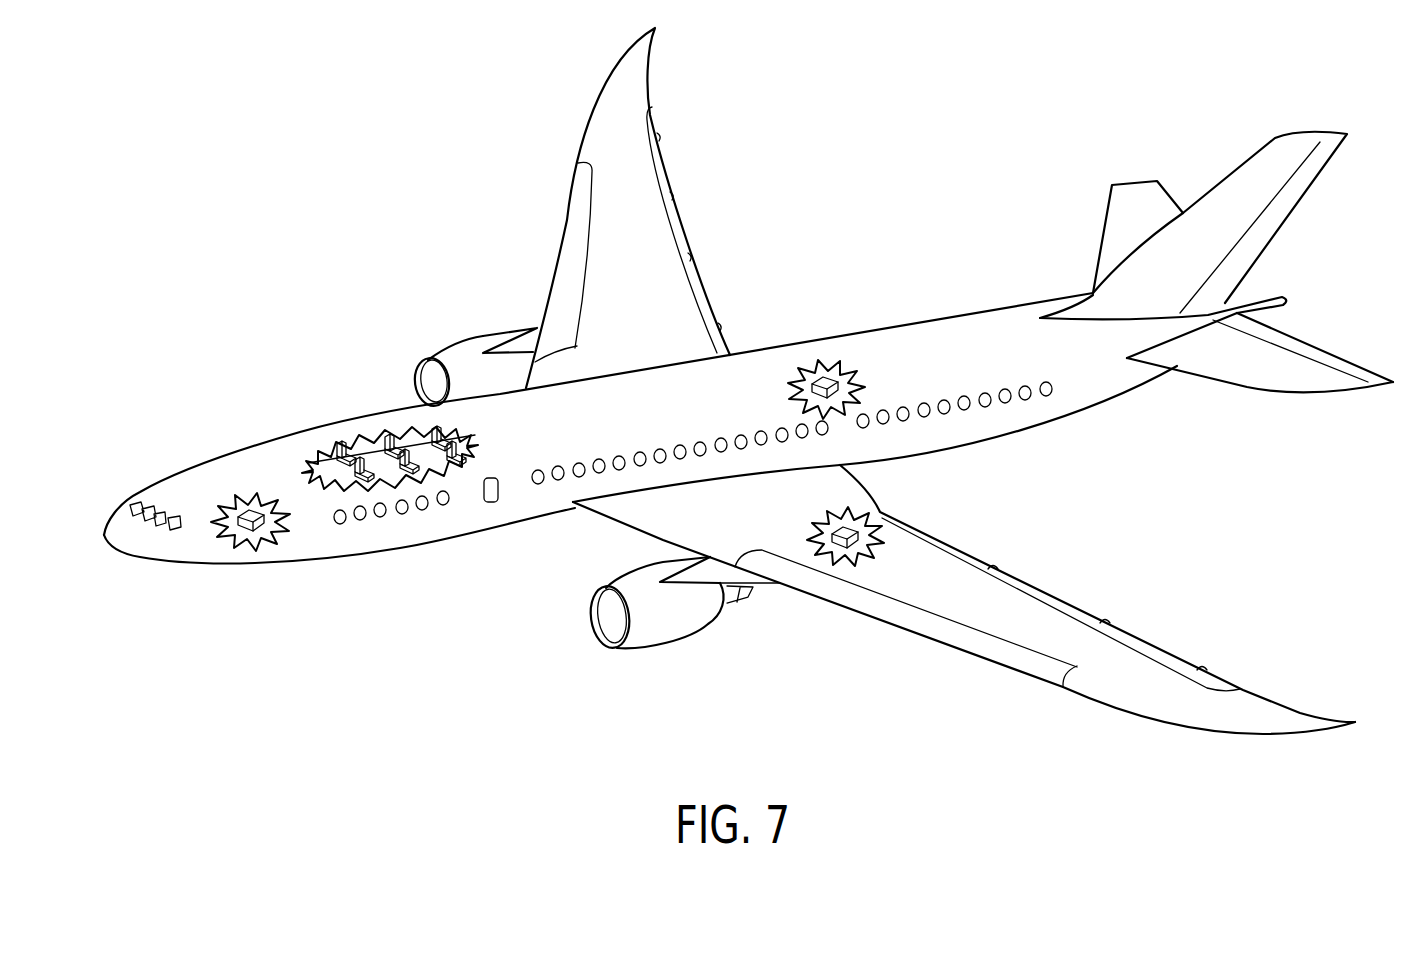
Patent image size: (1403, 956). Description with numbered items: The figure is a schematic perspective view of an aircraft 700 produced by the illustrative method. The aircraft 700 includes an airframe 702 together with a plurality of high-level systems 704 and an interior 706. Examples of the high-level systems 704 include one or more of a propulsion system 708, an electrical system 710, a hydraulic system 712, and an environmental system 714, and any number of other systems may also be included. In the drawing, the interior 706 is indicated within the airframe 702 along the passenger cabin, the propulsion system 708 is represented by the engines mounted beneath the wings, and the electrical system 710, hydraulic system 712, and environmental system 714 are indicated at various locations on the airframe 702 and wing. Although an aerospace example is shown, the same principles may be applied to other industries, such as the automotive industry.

The aircraft 700 is at (262, 168).
The airframe 702 is at (378, 403).
The high-level systems 704 is at (948, 287).
The interior 706 is at (339, 440).
The propulsion system 708 is at (458, 350).
The electrical system 710 is at (247, 505).
The hydraulic system 712 is at (850, 518).
The environmental system 714 is at (817, 377).